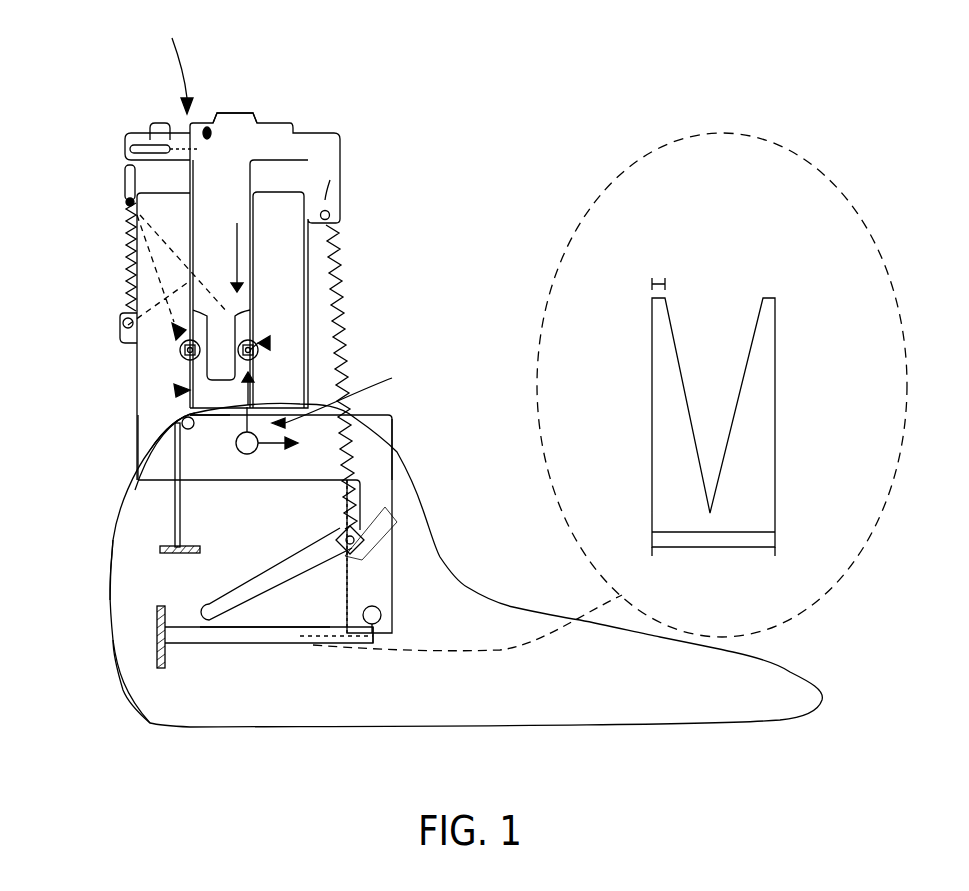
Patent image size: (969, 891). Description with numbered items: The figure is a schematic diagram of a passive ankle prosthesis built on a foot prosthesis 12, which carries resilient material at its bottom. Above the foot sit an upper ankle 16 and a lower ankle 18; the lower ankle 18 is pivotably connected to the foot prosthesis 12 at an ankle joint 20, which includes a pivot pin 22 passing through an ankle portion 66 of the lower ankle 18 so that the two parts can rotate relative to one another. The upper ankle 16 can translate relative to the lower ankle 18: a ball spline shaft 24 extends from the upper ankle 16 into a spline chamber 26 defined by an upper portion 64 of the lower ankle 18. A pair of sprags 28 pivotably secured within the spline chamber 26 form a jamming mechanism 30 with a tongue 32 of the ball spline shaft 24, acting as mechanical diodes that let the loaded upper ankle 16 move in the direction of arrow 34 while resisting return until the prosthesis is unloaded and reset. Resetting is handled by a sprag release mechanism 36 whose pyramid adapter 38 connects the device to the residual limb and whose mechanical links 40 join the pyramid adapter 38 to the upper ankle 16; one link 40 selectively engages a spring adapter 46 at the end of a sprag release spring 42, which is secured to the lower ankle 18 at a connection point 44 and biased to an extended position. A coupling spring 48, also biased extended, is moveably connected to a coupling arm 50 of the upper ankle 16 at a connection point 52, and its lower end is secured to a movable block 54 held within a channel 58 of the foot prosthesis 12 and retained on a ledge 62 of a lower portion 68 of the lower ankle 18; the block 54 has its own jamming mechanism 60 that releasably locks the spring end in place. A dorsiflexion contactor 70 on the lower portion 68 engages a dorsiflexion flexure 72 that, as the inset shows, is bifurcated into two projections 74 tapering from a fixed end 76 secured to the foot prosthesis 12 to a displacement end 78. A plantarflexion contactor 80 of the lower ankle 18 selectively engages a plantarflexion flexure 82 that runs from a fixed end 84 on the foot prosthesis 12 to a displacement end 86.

The foot prosthesis 12 is at (680, 695).
The upper ankle 16 is at (328, 150).
The lower ankle 18 is at (375, 473).
The ankle joint 20 is at (344, 393).
The pivot pin 22 is at (170, 548).
The ball spline shaft 24 is at (197, 250).
The spline chamber 26 is at (182, 425).
The sprags 28 is at (253, 337).
The jamming mechanism 30 is at (147, 397).
The tongue 32 is at (232, 362).
The arrow 34 is at (237, 257).
The sprag release mechanism 36 is at (172, 60).
The pyramid adapter 38 is at (240, 117).
The mechanical links 40 is at (207, 133).
The sprag release spring 42 is at (128, 297).
The connection point 44 is at (165, 330).
The spring adapter 46 is at (128, 183).
The coupling spring 48 is at (345, 320).
The coupling arm 50 is at (330, 187).
The connection point 52 is at (330, 213).
The movable block 54 is at (125, 323).
The channel 58 is at (213, 612).
The jamming mechanism 60 is at (358, 540).
The ledge 62 is at (368, 582).
The upper portion 64 is at (160, 417).
The ankle portion 66 is at (350, 418).
The lower portion 68 is at (372, 610).
The dorsiflexion contactor 70 is at (375, 617).
The dorsiflexion flexure 72 is at (273, 637).
The projections 74 is at (667, 377).
The fixed end 76 is at (161, 668).
The displacement end 78 is at (360, 643).
The plantarflexion contactor 80 is at (235, 450).
The plantarflexion flexure 82 is at (140, 500).
The fixed end 84 is at (180, 540).
The displacement end 86 is at (197, 415).